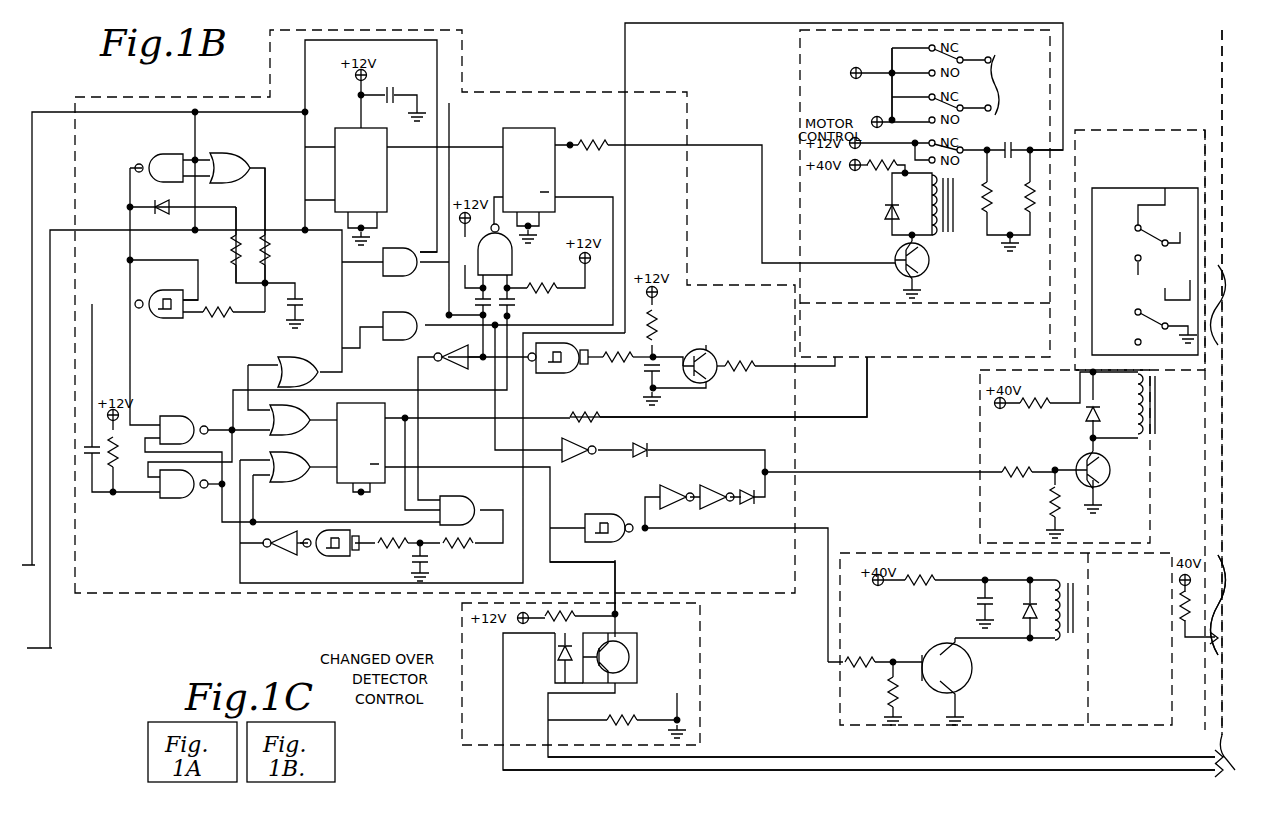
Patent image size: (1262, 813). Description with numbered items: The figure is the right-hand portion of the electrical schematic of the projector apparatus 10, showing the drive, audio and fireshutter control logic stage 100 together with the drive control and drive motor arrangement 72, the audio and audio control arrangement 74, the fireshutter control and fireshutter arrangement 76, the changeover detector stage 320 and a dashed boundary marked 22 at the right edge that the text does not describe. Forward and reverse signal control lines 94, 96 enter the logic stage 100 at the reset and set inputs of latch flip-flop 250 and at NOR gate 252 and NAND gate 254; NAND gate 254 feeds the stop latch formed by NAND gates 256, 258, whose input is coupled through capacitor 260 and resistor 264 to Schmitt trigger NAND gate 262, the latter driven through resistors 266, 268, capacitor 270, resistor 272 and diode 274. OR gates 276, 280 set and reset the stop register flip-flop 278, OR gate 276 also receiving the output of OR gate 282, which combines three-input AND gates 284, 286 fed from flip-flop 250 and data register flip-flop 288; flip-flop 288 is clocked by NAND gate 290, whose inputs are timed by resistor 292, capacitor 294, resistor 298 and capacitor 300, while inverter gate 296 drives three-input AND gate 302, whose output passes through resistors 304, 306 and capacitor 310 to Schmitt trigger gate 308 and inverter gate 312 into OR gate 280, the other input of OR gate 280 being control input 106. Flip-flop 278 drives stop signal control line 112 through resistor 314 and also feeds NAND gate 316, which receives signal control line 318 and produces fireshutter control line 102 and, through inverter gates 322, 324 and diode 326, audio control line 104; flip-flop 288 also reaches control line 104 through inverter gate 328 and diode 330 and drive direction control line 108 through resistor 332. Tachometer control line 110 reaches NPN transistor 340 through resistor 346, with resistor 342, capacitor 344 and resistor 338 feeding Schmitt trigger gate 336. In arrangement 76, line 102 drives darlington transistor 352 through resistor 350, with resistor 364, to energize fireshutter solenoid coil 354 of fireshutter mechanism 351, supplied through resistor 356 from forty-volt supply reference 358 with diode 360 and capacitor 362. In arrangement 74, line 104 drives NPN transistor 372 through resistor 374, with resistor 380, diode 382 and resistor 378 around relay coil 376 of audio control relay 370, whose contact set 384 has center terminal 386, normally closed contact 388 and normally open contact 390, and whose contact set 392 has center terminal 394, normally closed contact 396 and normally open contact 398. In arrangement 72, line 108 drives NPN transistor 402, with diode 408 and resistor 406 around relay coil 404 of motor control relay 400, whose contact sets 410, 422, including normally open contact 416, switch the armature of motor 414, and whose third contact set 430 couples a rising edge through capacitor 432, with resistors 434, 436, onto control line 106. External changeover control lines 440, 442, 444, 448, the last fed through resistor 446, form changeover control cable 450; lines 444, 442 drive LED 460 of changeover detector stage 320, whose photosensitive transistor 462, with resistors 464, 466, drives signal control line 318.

In FIG. 1B, the projector apparatus 10 is at (548, 42).
In FIG. 1B, the camera 22 is at (1219, 52).
In FIG. 1B, the drive control and drive motor arrangement 72 is at (842, 334).
In FIG. 1B, the audio and audio control arrangement 74 is at (1119, 124).
In FIG. 1B, the fireshutter control and fireshutter arrangement 76 is at (847, 733).
In FIG. 1B, the forward signal control line 94 is at (50, 112).
In FIG. 1B, the reverse signal control line 96 is at (58, 230).
In FIG. 1B, the drive, audio and fireshutter control logic stage 100 is at (82, 595).
In FIG. 1B, the fireshutter control line 102 is at (820, 528).
In FIG. 1B, the audio control line 104 is at (856, 474).
In FIG. 1B, the control line 106 is at (690, 23).
In FIG. 1B, the drive direction control line 108 is at (744, 146).
In FIG. 1B, the control line 110 is at (812, 368).
In FIG. 1B, the stop signal control line 112 is at (828, 418).
In FIG. 1B, the D flip-flop 250 is at (380, 178).
In FIG. 1B, the NOR gate 252 is at (213, 155).
In FIG. 1B, the NAND gate 254 is at (195, 154).
In FIG. 1B, the NAND gate 256 is at (178, 416).
In FIG. 1B, the NAND gate 258 is at (178, 500).
In FIG. 1B, the capacitor 260 is at (88, 480).
In FIG. 1B, the Schmitt trigger NAND gate 262 is at (181, 318).
In FIG. 1B, the resistor 264 is at (115, 485).
In FIG. 1B, the resistor 266 is at (220, 317).
In FIG. 1B, the resistor 268 is at (272, 244).
In FIG. 1B, the capacitor 270 is at (290, 285).
In FIG. 1B, the resistor 272 is at (233, 255).
In FIG. 1B, the diode 274 is at (160, 215).
In FIG. 1B, the OR gate 276 is at (288, 428).
In FIG. 1B, the flip-flop 278 is at (342, 452).
In FIG. 1B, the OR gate 280 is at (278, 480).
In FIG. 1B, the OR gate 282 is at (286, 360).
In FIG. 1B, the three input AND gate 284 is at (397, 255).
In FIG. 1B, the three input AND gate 286 is at (385, 318).
In FIG. 1B, the D flip-flop 288 is at (560, 168).
In FIG. 1B, the NAND gate 290 is at (513, 254).
In FIG. 1B, the resistor 292 is at (371, 146).
In FIG. 1B, the capacitor 294 is at (475, 301).
In FIG. 1B, the inverter gate 296 is at (450, 371).
In FIG. 1B, the resistor 298 is at (558, 289).
In FIG. 1B, the capacitor 300 is at (515, 305).
In FIG. 1B, the three input AND gate 302 is at (462, 497).
In FIG. 1B, the resistor 304 is at (468, 545).
In FIG. 1B, the resistor 306 is at (393, 550).
In FIG. 1B, the Schmitt trigger gate 308 is at (348, 560).
In FIG. 1B, the capacitor 310 is at (425, 568).
In FIG. 1B, the inverter gate 312 is at (283, 558).
In FIG. 1B, the resistor 314 is at (583, 412).
In FIG. 1B, the NAND gate 316 is at (628, 538).
In FIG. 1B, the signal control line 318 is at (615, 584).
In FIG. 1C, the changeover detector stage 320 is at (460, 609).
In FIG. 1B, the inverter gate 322 is at (670, 502).
In FIG. 1B, the inverter gate 324 is at (710, 502).
In FIG. 1B, the diode 326 is at (755, 504).
In FIG. 1B, the inverter gate 328 is at (575, 458).
In FIG. 1B, the diode 330 is at (636, 446).
In FIG. 1B, the resistor 332 is at (590, 141).
In FIG. 1B, the Schmitt trigger gate 336 is at (568, 375).
In FIG. 1B, the resistor 338 is at (618, 364).
In FIG. 1B, the NPN transistor 340 is at (700, 352).
In FIG. 1B, the resistor 342 is at (660, 323).
In FIG. 1B, the capacitor 344 is at (644, 380).
In FIG. 1B, the resistor 346 is at (733, 357).
In FIG. 1B, the series resistor 350 is at (860, 660).
In FIG. 1B, the fireshutter mechanism 351 is at (1140, 701).
In FIG. 1B, the NPN darlington transistor 352 is at (973, 676).
In FIG. 1B, the fireshutter solenoid coil 354 is at (1055, 634).
In FIG. 1B, the series resistor 356 is at (933, 579).
In FIG. 1B, the +40 VDC supply reference 358 is at (852, 72).
In FIG. 1B, the diode 360 is at (1023, 628).
In FIG. 1B, the capacitor 362 is at (967, 601).
In FIG. 1B, the resistor 364 is at (888, 687).
In FIG. 1B, the audio control relay 370 is at (1160, 425).
In FIG. 1B, the NPN transistor 372 is at (1077, 466).
In FIG. 1B, the series resistor 374 is at (1015, 477).
In FIG. 1B, the relay coil 376 is at (1128, 432).
In FIG. 1B, the series resistor 378 is at (1026, 415).
In FIG. 1B, the resistor 380 is at (1045, 510).
In FIG. 1B, the diode 382 is at (1085, 413).
In FIG. 1B, the set of relay contacts 384 is at (1156, 220).
In FIG. 1B, the center terminal 386 is at (1166, 248).
In FIG. 1B, the normally closed contact 388 is at (1136, 231).
In FIG. 1B, the normally open contact 390 is at (1119, 277).
In FIG. 1B, the second set of relay contacts 392 is at (1150, 310).
In FIG. 1B, the center terminal 394 is at (1166, 323).
In FIG. 1B, the normally closed contact 396 is at (1136, 316).
In FIG. 1B, the normally open contact 398 is at (1136, 344).
In FIG. 1B, the motor control relay 400 is at (952, 232).
In FIG. 1B, the NPN transistor 402 is at (897, 267).
In FIG. 1B, the relay coil 404 is at (937, 225).
In FIG. 1B, the series resistor 406 is at (870, 174).
In FIG. 1B, the diode 408 is at (877, 213).
In FIG. 1B, the first set of relay contacts 410 is at (953, 52).
In FIG. 1B, the motor 414 is at (1020, 83).
In FIG. 1B, the normally open contact 416 is at (862, 71).
In FIG. 1B, the second set of contacts 422 is at (949, 105).
In FIG. 1B, the third set of relay contacts 430 is at (952, 142).
In FIG. 1B, the series capacitor 432 is at (1007, 145).
In FIG. 1B, the resistor 434 is at (985, 186).
In FIG. 1B, the second resistor 436 is at (1030, 196).
In FIG. 1B, the external changeover control line 440 is at (1205, 297).
In FIG. 1B, the external control line 442 is at (735, 757).
In FIG. 1B, the external control line 444 is at (747, 772).
In FIG. 1B, the resistor 446 is at (1188, 606).
In FIG. 1B, the external changeover control line 448 is at (1205, 658).
In FIG. 1B, the changeover control cable 450 is at (1215, 347).
In FIG. 1C, the LED 460 is at (555, 659).
In FIG. 1C, the photosensitive transistor 462 is at (635, 654).
In FIG. 1C, the series resistor 464 is at (575, 617).
In FIG. 1C, the resistor 466 is at (610, 720).